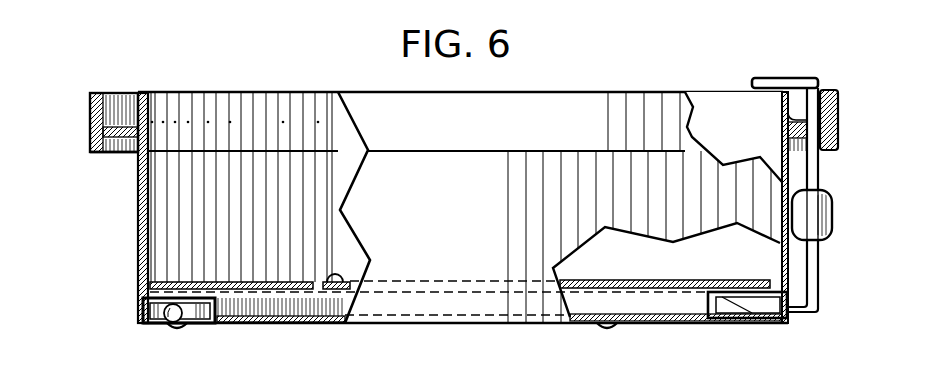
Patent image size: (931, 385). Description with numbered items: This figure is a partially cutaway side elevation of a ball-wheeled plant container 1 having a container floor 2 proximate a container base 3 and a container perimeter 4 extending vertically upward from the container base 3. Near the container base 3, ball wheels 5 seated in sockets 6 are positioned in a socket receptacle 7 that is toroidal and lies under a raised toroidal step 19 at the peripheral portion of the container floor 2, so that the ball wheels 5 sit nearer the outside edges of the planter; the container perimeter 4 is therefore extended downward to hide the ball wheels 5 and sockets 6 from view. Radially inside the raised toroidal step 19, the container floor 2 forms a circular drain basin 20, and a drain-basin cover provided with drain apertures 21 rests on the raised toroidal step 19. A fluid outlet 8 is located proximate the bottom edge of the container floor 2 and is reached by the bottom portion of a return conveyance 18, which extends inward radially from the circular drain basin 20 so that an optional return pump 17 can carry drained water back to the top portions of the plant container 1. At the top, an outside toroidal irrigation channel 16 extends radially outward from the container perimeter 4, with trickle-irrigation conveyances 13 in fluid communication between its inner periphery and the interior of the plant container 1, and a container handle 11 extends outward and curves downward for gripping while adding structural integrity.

The plant container 1 is at (128, 48).
The container floor 2 is at (345, 324).
The container base 3 is at (103, 286).
The container perimeter 4 is at (140, 211).
The ball wheels 5 is at (165, 331).
The sockets 6 is at (188, 331).
The socket receptacle 7 is at (220, 325).
The fluid outlet 8 is at (716, 323).
The container handle 11 is at (90, 153).
The trickle-irrigation conveyances 13 is at (253, 123).
The outside toroidal irrigation channel 16 is at (118, 108).
The return pump 17 is at (833, 215).
The return conveyance 18 is at (782, 83).
The raised toroidal step 19 is at (757, 321).
The circular drain basin 20 is at (268, 292).
The drain apertures 21 is at (305, 323).